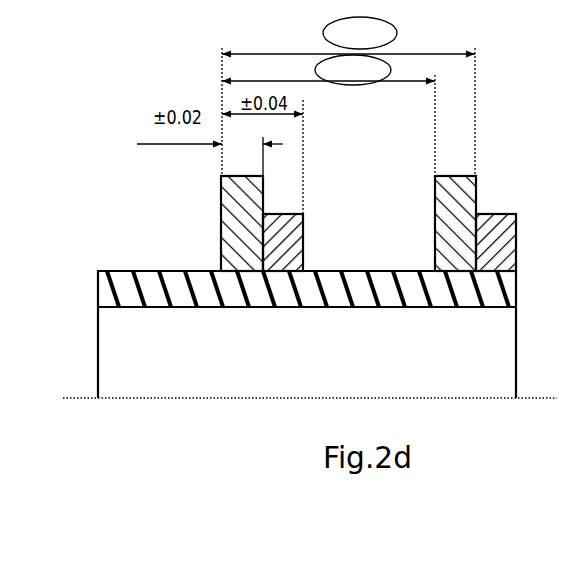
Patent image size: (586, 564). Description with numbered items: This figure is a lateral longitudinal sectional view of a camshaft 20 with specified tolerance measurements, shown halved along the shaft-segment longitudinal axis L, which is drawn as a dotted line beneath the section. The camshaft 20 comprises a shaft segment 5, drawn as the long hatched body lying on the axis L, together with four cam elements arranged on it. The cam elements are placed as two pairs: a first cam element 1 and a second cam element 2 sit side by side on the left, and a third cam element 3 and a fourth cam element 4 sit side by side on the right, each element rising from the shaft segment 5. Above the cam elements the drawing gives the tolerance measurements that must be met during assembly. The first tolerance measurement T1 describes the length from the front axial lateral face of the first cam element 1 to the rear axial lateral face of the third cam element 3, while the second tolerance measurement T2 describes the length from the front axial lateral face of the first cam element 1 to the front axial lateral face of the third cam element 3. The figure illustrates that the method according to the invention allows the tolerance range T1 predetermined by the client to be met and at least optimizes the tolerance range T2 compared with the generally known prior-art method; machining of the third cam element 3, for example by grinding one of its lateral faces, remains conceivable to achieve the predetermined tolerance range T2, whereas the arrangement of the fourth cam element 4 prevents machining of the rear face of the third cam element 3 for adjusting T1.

The first cam element 1 is at (221, 212).
The second cam element 2 is at (303, 233).
The third cam element 3 is at (435, 213).
The fourth cam element 4 is at (500, 214).
The shaft segment 5 is at (138, 270).
The camshaft 20 is at (508, 88).
The first tolerance measurement T1 is at (398, 30).
The second tolerance measurement T2 is at (317, 63).
The shaft-segment longitudinal axis L is at (74, 397).